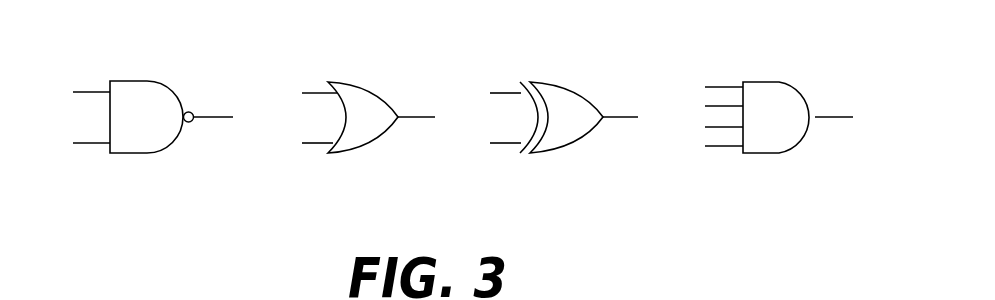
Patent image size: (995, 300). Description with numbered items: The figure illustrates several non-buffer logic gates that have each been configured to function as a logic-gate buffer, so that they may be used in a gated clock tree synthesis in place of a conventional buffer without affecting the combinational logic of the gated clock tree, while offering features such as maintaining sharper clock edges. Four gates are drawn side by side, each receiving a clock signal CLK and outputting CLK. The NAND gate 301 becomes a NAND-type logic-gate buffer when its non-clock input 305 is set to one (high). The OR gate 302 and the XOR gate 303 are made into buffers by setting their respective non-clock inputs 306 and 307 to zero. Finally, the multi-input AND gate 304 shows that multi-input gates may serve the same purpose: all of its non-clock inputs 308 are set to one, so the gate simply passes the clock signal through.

The NAND gate 301 is at (127, 80).
The OR gate 302 is at (347, 82).
The XOR gate 303 is at (535, 82).
The multi-input AND gate 304 is at (762, 81).
The non-clock input 305 is at (97, 143).
The non-clock input 306 is at (313, 143).
The non-clock input 307 is at (507, 143).
The non-clock inputs 308 is at (707, 153).